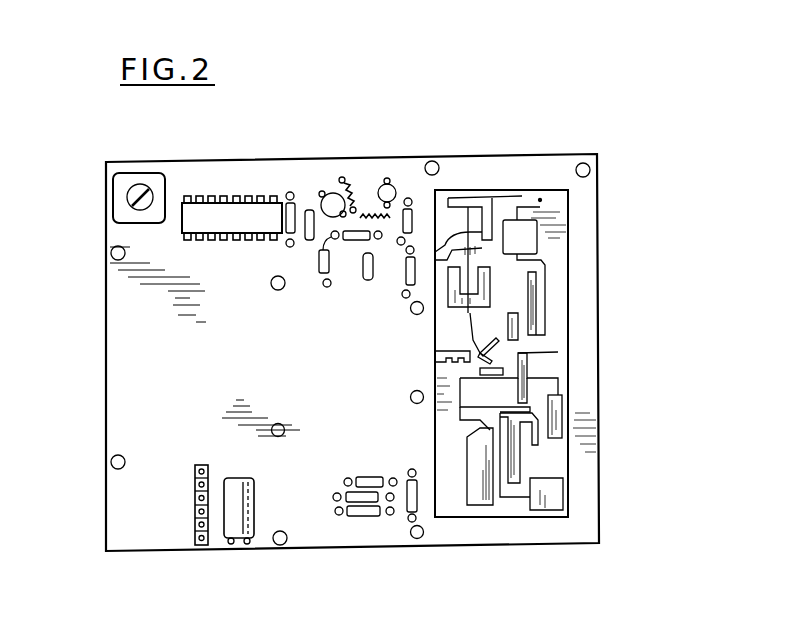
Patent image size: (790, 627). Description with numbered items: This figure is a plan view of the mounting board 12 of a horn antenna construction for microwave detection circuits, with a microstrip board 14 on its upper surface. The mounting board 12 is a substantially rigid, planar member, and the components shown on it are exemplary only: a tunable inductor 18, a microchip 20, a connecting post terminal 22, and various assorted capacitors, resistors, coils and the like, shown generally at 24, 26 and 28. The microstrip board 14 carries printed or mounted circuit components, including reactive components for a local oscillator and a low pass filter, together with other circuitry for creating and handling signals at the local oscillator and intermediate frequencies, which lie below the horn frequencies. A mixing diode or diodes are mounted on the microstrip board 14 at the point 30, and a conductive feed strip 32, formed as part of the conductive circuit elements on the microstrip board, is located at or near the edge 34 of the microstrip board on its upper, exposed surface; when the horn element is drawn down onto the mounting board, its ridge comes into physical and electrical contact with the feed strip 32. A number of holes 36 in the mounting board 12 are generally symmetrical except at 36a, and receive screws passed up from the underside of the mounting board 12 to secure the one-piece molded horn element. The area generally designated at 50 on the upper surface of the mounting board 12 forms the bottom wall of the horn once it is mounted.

The mounting board 12 is at (597, 201).
The microstrip board 14 is at (532, 192).
The tunable inductor 18 is at (139, 176).
The microchip 20 is at (224, 212).
The connecting post terminal 22 is at (191, 534).
The capacitors, resistors, coils 24 is at (267, 470).
The capacitors, resistors, coils 26 is at (300, 188).
The capacitors, resistors, coils 28 is at (367, 293).
The mixing diode mounting point 30 is at (478, 351).
The conductive feed strip 32 is at (437, 353).
The edge of the microstrip board 34 is at (436, 432).
The holes 36 is at (432, 161).
The hole 36a is at (280, 546).
The area of upper surface of mounting board 50 is at (158, 346).